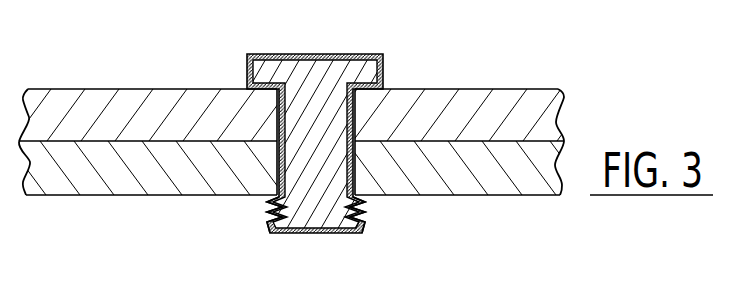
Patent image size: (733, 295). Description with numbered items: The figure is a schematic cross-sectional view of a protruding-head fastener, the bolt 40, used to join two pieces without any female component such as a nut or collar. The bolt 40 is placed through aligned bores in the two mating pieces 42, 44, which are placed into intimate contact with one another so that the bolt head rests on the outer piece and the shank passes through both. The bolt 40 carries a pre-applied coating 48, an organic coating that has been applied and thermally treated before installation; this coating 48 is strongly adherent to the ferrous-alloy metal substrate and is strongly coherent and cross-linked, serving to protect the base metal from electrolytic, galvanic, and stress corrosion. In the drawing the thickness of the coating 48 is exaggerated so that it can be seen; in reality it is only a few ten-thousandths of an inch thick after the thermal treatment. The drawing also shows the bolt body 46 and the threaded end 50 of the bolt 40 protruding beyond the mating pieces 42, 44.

The bolt 40 is at (319, 147).
The mating piece 42 is at (121, 100).
The mating piece 44 is at (122, 182).
The fastener body 46 is at (303, 72).
The coating 48 is at (337, 55).
The threads 50 is at (305, 233).